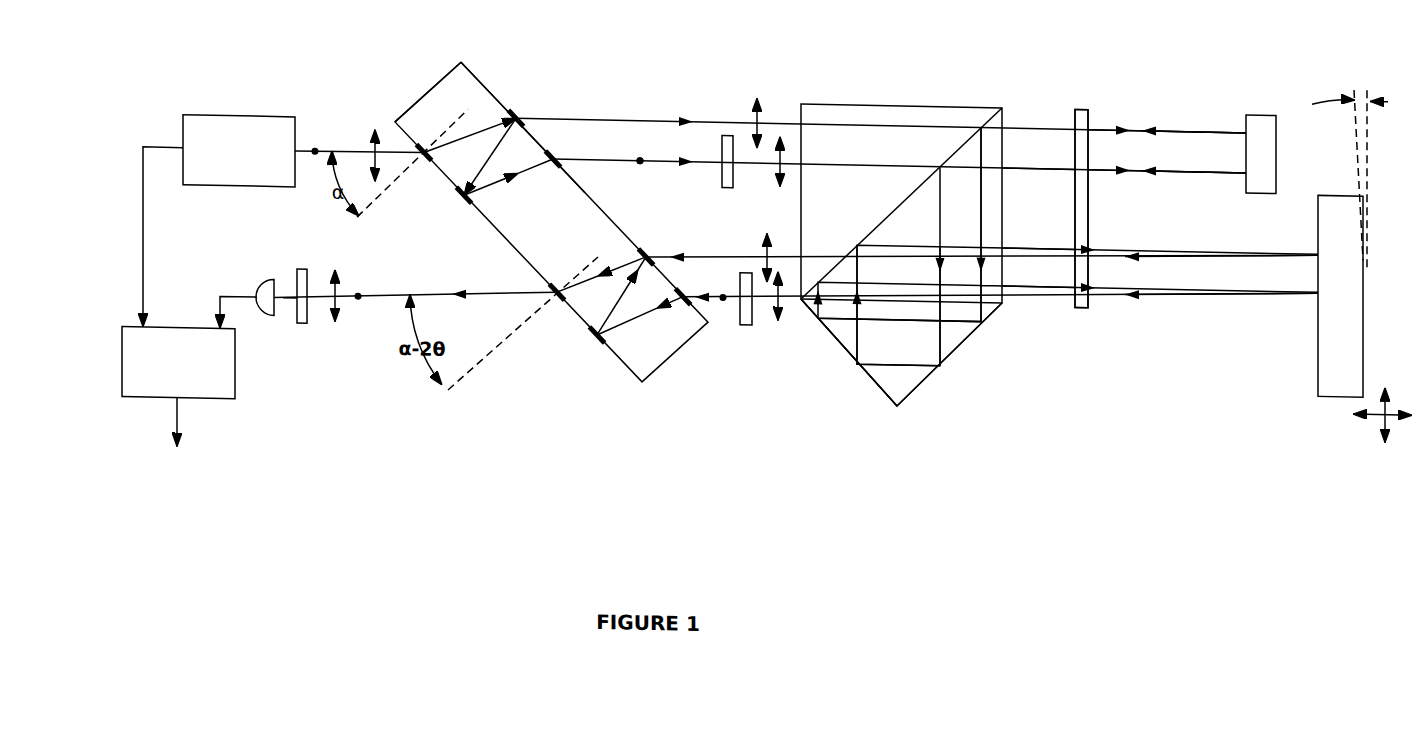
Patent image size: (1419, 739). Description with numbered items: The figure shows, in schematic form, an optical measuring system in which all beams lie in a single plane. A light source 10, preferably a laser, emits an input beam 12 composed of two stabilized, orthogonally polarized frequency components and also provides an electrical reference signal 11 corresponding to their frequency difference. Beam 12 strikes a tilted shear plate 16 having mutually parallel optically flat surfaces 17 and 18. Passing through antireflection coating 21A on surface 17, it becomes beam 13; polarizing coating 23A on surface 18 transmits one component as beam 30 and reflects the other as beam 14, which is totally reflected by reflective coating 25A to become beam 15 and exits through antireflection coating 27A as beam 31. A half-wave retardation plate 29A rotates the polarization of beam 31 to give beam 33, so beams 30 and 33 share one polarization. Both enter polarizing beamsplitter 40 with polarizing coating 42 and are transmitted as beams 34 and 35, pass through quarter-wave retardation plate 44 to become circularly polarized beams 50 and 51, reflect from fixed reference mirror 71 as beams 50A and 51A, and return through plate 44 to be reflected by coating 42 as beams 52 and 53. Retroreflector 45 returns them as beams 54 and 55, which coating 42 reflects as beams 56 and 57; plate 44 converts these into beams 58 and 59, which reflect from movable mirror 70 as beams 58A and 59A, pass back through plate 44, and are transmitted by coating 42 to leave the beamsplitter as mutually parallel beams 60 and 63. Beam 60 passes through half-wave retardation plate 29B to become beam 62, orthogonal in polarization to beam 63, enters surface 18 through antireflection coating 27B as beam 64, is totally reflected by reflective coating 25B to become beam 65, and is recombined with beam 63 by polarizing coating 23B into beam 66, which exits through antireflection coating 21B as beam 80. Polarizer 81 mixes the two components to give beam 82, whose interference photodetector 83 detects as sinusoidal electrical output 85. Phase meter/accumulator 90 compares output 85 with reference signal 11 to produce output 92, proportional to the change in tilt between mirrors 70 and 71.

The light source 10 is at (217, 111).
The electrical reference signal 11 is at (143, 262).
The input beam 12 is at (308, 152).
The beam 13 is at (480, 113).
The beam 14 is at (487, 150).
The beam 15 is at (543, 152).
The shear plate 16 is at (433, 76).
The surface 17 is at (395, 114).
The surface 18 is at (477, 68).
The antireflection coating 21A is at (428, 150).
The polarizing coating 23A is at (508, 97).
The reflective coating 25A is at (470, 192).
The antireflection coating 27A is at (553, 147).
The antireflection coating 21B is at (554, 288).
The polarizing coating 23B is at (647, 237).
The reflective coating 25B is at (598, 330).
The antireflection coating 27B is at (686, 278).
The half-wave retardation plate 29A is at (722, 172).
The half-wave retardation plate 29B is at (750, 310).
The beam 30 is at (613, 106).
The beam 31 is at (653, 147).
The beam 33 is at (752, 150).
The beam 34 is at (1042, 104).
The beam 35 is at (1068, 147).
The polarizing beamsplitter 40 is at (863, 88).
The polarizing coating 42 is at (953, 134).
The quarter-wave retardation plate 44 is at (1082, 88).
The retroreflector 45 is at (917, 369).
The beam 50 is at (1135, 108).
The beam 50A is at (1150, 108).
The beam 51 is at (1130, 148).
The beam 51A is at (1150, 152).
The beam 52 is at (983, 288).
The beam 53 is at (938, 320).
The beam 54 is at (810, 296).
The beam 55 is at (860, 325).
The beam 56 is at (1058, 266).
The beam 57 is at (1050, 226).
The beam 58 is at (1095, 266).
The beam 58A is at (1130, 274).
The beam 59 is at (1095, 228).
The beam 59A is at (1130, 236).
The beam 60 is at (795, 285).
The beam 62 is at (700, 335).
The beam 63 is at (733, 242).
The beam 64 is at (677, 296).
The beam 65 is at (622, 284).
The beam 66 is at (627, 240).
The movable mirror 70 is at (1340, 370).
The fixed reference mirror 71 is at (1258, 90).
The beam 80 is at (385, 292).
The polarizer 81 is at (307, 264).
The beam 82 is at (287, 298).
The photodetector 83 is at (263, 275).
The sinusoidal electrical output 85 is at (250, 290).
The phase meter/accumulator 90 is at (235, 367).
The output 92 is at (177, 408).